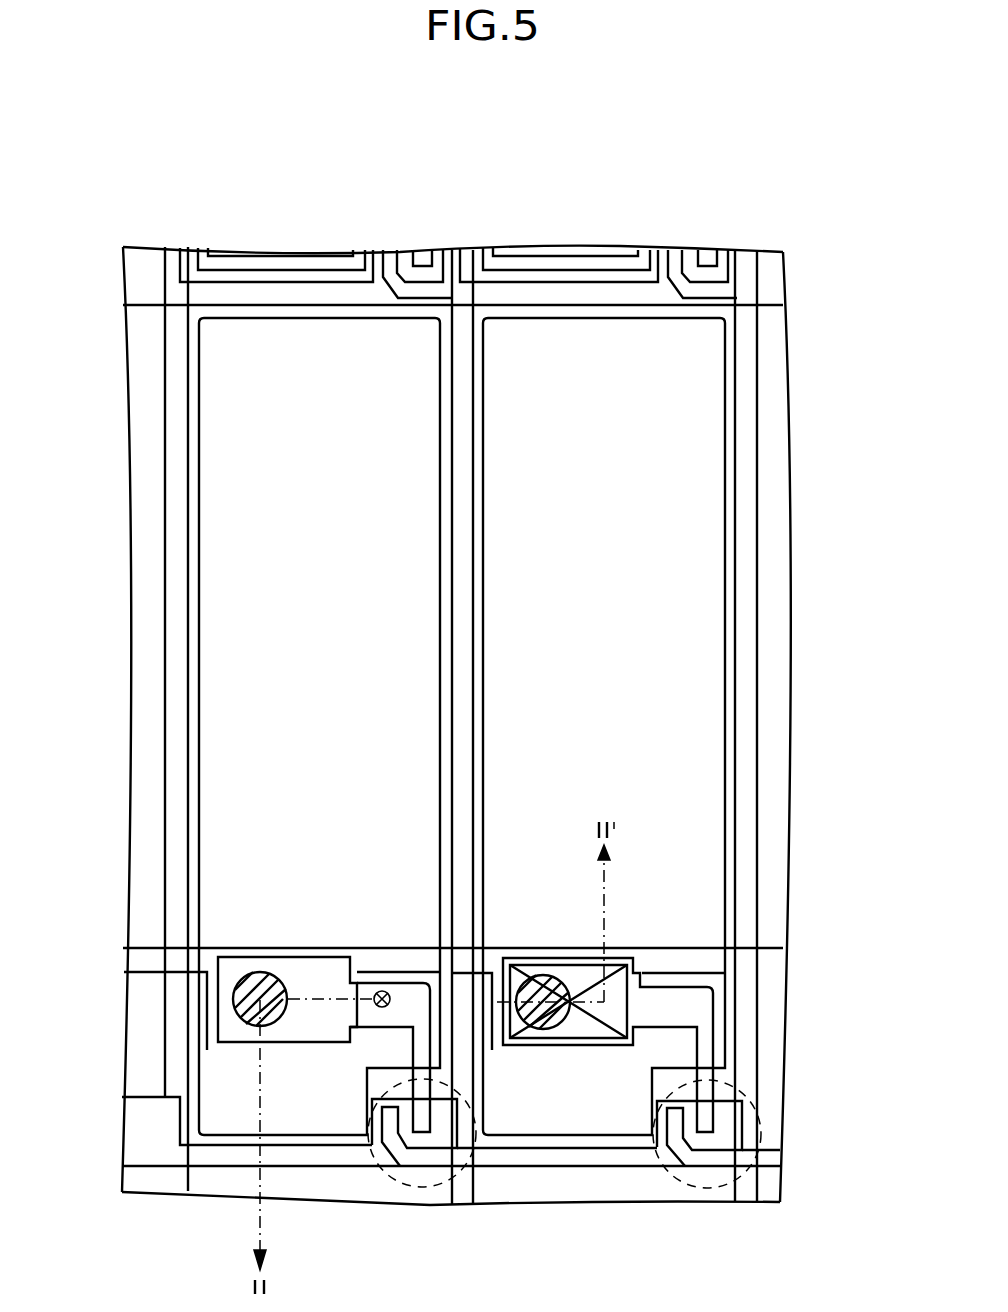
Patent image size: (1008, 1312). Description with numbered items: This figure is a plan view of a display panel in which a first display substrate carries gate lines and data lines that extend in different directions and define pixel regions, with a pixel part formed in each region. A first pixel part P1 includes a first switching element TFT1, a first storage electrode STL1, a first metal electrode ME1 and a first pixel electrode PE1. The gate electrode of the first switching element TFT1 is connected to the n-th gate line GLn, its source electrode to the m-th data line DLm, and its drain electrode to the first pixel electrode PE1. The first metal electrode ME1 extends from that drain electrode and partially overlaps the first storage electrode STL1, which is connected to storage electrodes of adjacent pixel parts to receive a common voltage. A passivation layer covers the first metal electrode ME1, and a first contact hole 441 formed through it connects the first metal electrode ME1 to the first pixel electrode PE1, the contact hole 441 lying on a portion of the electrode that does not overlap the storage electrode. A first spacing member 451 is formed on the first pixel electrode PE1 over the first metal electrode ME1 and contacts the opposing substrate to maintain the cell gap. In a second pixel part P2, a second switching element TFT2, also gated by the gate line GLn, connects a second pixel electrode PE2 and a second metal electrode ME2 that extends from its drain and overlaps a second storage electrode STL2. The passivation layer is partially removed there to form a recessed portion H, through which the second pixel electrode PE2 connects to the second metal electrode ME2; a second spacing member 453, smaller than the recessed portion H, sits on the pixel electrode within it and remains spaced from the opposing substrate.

The first pixel electrode PE1 is at (199, 575).
The second pixel electrode PE2 is at (724, 577).
The first pixel part P1 is at (325, 553).
The second pixel part P2 is at (613, 553).
The first metal electrode ME1 is at (228, 957).
The first spacing member 451 is at (261, 972).
The first storage electrode STL1 is at (320, 950).
The first contact hole 441 is at (383, 990).
The second metal electrode ME2 is at (511, 957).
The second spacing member 453 is at (544, 975).
The recessed portion H is at (607, 965).
The second storage electrode STL2 is at (627, 952).
The first switching element TFT1 is at (418, 1207).
The m-th data line DLm is at (460, 1192).
The second switching element TFT2 is at (703, 1190).
The n-th gate line GLn is at (768, 1162).